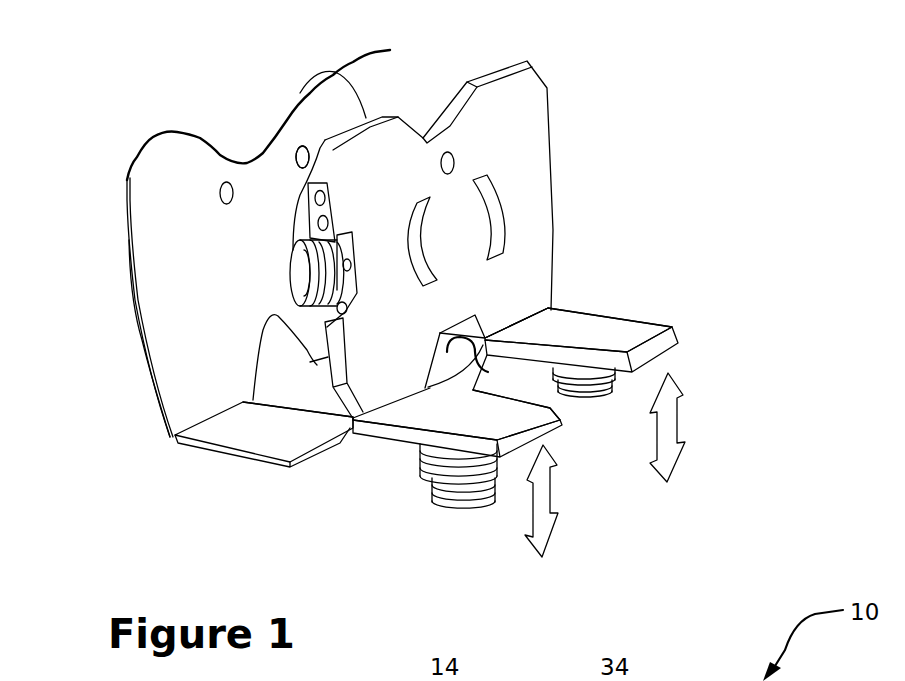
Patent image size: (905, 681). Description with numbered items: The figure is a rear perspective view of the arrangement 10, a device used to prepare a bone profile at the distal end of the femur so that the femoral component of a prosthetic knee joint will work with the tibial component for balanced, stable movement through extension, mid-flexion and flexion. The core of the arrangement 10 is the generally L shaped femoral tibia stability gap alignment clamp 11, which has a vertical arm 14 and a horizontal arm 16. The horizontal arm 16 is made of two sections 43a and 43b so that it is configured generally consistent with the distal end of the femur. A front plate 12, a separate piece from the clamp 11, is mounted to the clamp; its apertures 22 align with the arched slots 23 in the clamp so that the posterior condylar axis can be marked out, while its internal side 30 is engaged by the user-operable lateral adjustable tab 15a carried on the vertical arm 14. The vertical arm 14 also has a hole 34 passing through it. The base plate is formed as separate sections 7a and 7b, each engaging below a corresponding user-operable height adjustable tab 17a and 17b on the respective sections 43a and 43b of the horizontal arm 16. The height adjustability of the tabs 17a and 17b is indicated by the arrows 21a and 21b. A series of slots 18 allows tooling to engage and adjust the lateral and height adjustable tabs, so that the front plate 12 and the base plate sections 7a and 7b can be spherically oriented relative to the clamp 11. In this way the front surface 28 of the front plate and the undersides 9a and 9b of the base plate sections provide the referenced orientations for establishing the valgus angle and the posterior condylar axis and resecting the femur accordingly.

The base plate section 7a is at (207, 433).
The base plate section 7b is at (475, 362).
The underside of base plate section 9a is at (288, 470).
The underside of base plate section 9b is at (458, 383).
The arrangement 10 is at (652, 128).
The generally L shaped femoral tibia stability gap alignment clamp 11 is at (547, 60).
The front plate 12 is at (302, 146).
The vertical arm 14 is at (540, 185).
The user-operable lateral adjustable tab 15a is at (293, 270).
The horizontal arm 16 is at (413, 413).
The user-operable height adjustable tab 17a is at (473, 505).
The user-operable height adjustable tab 17b is at (596, 392).
The slots 18 is at (317, 200).
The arrow indicating height adjustability 21a is at (550, 488).
The arrow indicating height adjustability 21b is at (677, 417).
The apertures 22 is at (353, 62).
The arched slots 23 is at (410, 278).
The front surface of the front plate 28 is at (122, 231).
The internal side of the front plate 30 is at (174, 170).
The hole 34 is at (458, 152).
The horizontal arm section 43a is at (453, 423).
The horizontal arm section 43b is at (563, 323).